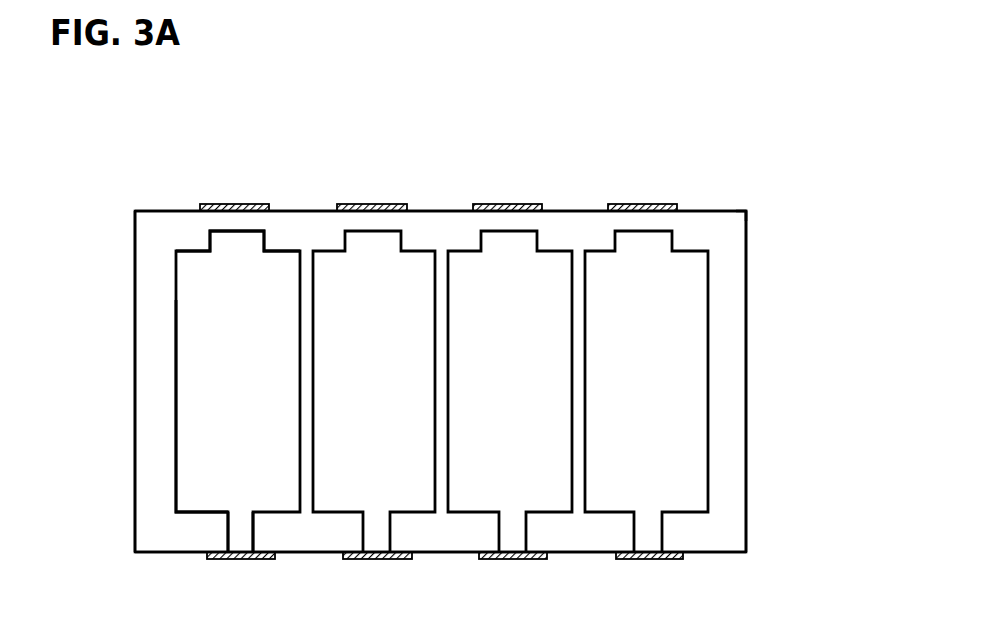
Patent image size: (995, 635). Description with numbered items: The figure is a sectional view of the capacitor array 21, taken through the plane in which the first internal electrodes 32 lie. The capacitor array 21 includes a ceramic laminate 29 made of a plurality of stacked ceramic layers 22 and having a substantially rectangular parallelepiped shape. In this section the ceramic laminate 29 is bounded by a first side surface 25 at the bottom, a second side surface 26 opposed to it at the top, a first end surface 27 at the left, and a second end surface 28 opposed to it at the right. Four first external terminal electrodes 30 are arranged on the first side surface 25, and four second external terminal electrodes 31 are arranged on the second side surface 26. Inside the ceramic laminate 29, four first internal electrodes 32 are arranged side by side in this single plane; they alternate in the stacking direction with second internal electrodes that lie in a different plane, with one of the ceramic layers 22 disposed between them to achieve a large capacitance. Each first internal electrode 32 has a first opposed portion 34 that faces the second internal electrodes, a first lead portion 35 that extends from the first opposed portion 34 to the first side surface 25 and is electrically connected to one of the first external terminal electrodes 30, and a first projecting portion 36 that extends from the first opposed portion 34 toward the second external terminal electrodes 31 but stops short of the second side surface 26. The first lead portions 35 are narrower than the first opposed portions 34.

The capacitor array 21 is at (189, 98).
The ceramic layers 22 is at (738, 256).
The first side surface 25 is at (438, 553).
The second side surface 26 is at (432, 208).
The first end surface 27 is at (135, 340).
The second end surface 28 is at (748, 347).
The ceramic laminate 29 is at (749, 209).
The first external terminal electrodes 30 is at (375, 559).
The second external terminal electrodes 31 is at (378, 203).
The first internal electrodes 32 is at (174, 387).
The first opposed portions 34 is at (187, 458).
The first lead portions 35 is at (230, 535).
The first projecting portions 36 is at (217, 247).